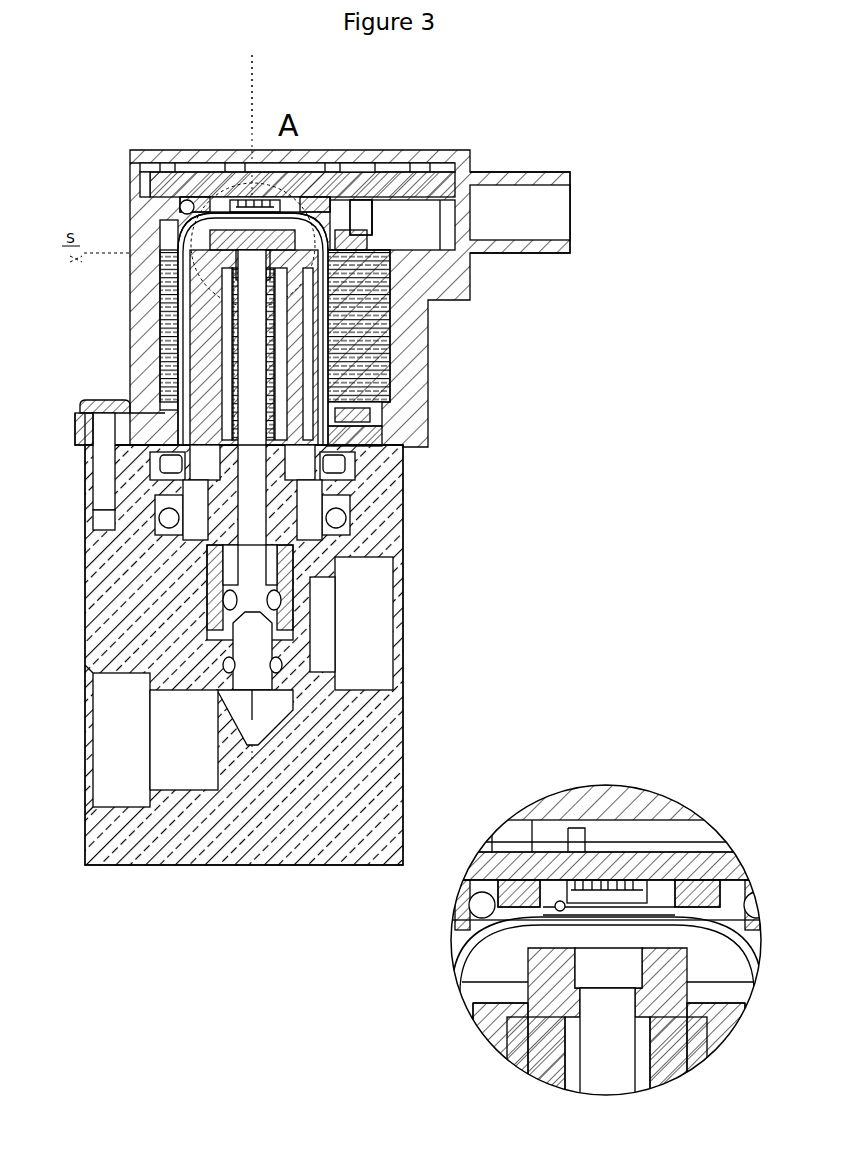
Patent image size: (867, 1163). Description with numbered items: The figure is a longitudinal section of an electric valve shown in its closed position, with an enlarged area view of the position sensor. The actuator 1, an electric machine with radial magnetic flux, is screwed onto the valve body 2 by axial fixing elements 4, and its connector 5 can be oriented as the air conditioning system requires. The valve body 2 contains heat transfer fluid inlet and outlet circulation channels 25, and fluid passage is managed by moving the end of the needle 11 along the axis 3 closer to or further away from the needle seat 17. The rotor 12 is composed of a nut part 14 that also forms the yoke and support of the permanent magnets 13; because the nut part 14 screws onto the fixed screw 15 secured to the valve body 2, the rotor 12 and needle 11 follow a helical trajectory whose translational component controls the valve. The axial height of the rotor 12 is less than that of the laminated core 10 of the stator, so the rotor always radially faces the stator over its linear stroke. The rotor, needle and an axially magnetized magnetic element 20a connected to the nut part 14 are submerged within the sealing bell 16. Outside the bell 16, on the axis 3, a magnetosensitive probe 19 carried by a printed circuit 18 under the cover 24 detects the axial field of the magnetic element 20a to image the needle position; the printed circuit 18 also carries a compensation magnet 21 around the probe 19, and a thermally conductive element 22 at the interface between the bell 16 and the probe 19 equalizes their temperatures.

The actuator 1 is at (430, 425).
The valve body 2 is at (385, 752).
The axis 3 is at (250, 80).
The fixing elements 4 is at (100, 405).
The connector 5 is at (510, 180).
The laminated core 10 is at (335, 328).
The needle 11 is at (255, 488).
The rotor 12 is at (203, 315).
The permanent magnets 13 is at (392, 270).
The nut part 14 is at (343, 373).
The screw 15 is at (225, 360).
The sealing bell 16 is at (180, 218).
The needle seat 17 is at (283, 613).
The printed circuit 18 is at (385, 193).
The magnetosensitive probe 19 is at (650, 968).
The magnetic element 20a is at (180, 215).
The compensation magnet 21 is at (290, 200).
The thermally conductive element 22 is at (583, 888).
The cover 24 is at (343, 190).
The circulation channels 25 is at (365, 601).